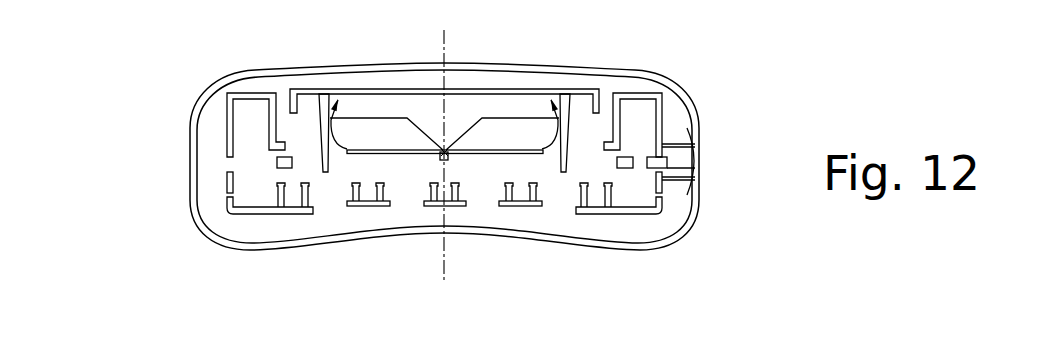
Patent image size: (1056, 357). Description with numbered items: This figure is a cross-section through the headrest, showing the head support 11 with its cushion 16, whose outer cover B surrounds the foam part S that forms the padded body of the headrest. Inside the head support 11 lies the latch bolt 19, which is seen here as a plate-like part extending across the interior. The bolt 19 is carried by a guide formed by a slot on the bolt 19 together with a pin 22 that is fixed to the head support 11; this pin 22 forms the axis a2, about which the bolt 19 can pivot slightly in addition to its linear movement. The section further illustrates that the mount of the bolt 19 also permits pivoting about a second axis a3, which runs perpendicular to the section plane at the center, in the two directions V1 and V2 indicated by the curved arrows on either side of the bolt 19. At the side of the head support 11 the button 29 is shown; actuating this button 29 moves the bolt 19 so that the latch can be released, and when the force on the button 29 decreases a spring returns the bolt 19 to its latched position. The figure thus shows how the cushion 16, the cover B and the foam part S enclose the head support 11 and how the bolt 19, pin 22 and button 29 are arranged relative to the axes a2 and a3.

The head support 11 is at (227, 118).
The cushion 16 is at (332, 226).
The bolt 19 is at (386, 155).
The pin 22 is at (444, 154).
The button 29 is at (686, 160).
The cover B is at (197, 226).
The foam part S is at (262, 222).
The axis a2 is at (445, 267).
The axis a3 is at (450, 146).
The pivoting direction v1 V1 is at (348, 122).
The pivoting direction v2 V2 is at (542, 122).